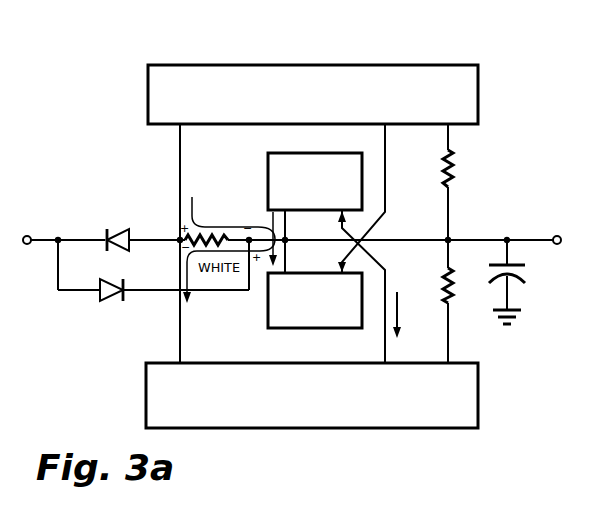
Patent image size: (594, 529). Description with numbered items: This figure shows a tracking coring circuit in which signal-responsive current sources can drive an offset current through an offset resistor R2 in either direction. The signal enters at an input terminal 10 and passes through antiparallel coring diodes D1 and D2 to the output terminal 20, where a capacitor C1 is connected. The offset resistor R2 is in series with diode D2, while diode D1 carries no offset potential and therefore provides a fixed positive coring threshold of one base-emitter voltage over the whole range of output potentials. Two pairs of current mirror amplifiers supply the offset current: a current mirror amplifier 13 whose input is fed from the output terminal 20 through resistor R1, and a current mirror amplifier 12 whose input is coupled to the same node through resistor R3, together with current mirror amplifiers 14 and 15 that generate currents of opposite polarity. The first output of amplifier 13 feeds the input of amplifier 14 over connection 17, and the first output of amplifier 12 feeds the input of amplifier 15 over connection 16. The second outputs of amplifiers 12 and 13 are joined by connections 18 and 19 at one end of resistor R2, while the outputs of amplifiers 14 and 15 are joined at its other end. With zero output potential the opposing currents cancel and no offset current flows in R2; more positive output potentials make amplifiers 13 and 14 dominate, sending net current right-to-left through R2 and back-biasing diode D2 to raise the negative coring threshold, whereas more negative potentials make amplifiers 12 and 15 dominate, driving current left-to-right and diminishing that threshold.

The input terminal 10 is at (28, 245).
The current mirror amplifier CMA3 12 is at (478, 97).
The current mirror amplifier CMA1 13 is at (478, 393).
The current mirror amplifier CMA2 14 is at (268, 170).
The current mirror amplifier CMA4 15 is at (268, 322).
The connection from CMA3 OUT1 to CMA4 IN 16 is at (387, 143).
The connection from CMA2 IN to CMA1 OUT1 17 is at (387, 285).
The connection from CMA3 OUT2 18 is at (181, 140).
The connection to CMA1 OUT2 19 is at (181, 337).
The output terminal 20 is at (560, 236).
The coring diode D1 is at (111, 301).
The coring diode D2 is at (118, 227).
The resistor R1 is at (458, 301).
The resistor R2 is at (207, 226).
The resistor R3 is at (459, 182).
The capacitor C1 is at (519, 282).